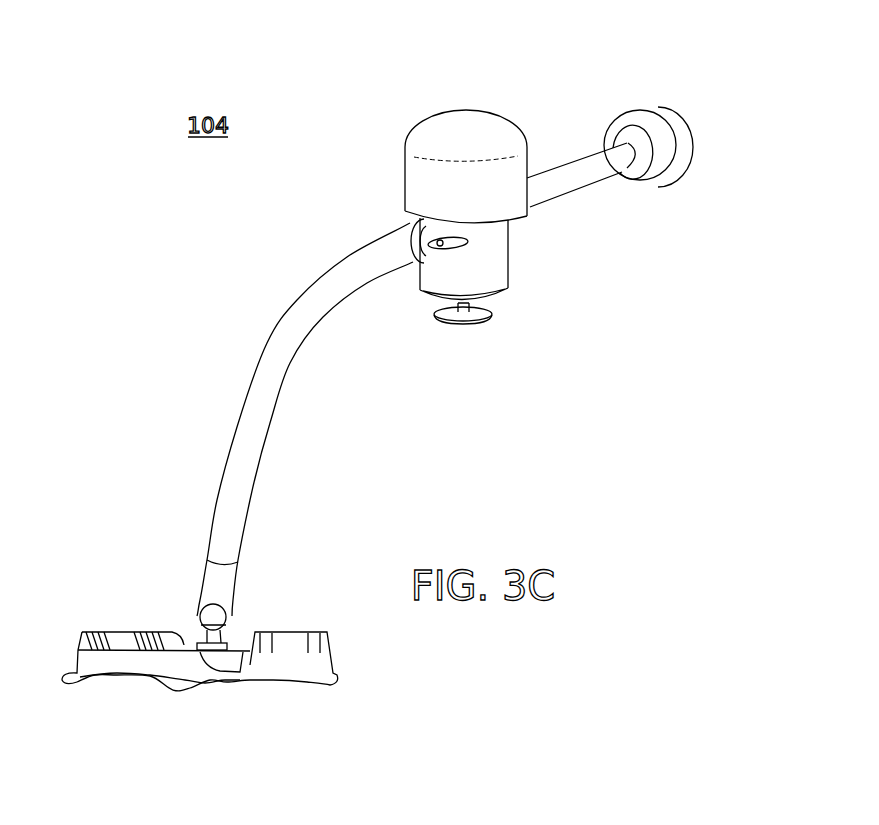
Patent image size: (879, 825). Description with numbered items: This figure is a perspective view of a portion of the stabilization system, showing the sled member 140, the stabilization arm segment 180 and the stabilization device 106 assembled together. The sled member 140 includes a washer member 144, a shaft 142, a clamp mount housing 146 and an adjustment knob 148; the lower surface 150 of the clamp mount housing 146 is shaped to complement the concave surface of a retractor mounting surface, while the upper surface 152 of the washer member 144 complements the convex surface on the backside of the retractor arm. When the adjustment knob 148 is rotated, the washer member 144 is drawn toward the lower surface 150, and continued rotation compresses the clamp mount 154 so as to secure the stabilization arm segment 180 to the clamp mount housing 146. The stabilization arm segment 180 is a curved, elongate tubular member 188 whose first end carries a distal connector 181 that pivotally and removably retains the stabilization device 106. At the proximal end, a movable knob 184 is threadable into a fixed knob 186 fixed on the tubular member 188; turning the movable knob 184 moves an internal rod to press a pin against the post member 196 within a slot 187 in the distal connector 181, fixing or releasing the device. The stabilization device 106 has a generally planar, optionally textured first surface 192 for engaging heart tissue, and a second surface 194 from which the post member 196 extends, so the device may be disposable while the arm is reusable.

The stabilization device 106 is at (270, 698).
The sled member 140 is at (502, 45).
The shaft 142 is at (470, 306).
The washer member 144 is at (466, 326).
The clamp mount housing 146 is at (505, 259).
The adjustment knob 148 is at (497, 127).
The lower surface 150 is at (427, 296).
The upper surface 152 is at (434, 311).
The clamp mount 154 is at (411, 222).
The stabilization arm segment 180 is at (264, 260).
The distal connector 181 is at (206, 577).
The movable knob 184 is at (691, 145).
The fixed knob 186 is at (611, 125).
The slot 187 is at (199, 616).
The tubular member 188 is at (272, 425).
The first surface 192 is at (69, 686).
The second surface 194 is at (183, 645).
The post member 196 is at (232, 639).